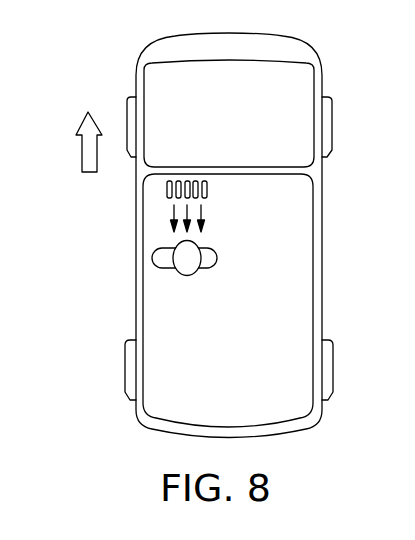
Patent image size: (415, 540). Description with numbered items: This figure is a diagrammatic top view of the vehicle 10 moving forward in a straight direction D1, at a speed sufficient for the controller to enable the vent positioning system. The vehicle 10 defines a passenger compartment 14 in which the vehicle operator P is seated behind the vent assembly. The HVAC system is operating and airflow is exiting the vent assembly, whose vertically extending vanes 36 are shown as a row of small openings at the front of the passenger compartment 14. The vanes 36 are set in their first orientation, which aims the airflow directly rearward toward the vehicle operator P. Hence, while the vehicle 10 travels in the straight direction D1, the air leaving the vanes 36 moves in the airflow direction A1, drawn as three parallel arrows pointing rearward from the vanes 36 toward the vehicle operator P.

The vehicle 10 is at (272, 40).
The passenger compartment 14 is at (273, 285).
The vertically extending vanes 36 is at (208, 190).
The airflow direction A1 is at (203, 225).
The vehicle operator P is at (215, 263).
The straight direction D1 is at (82, 155).